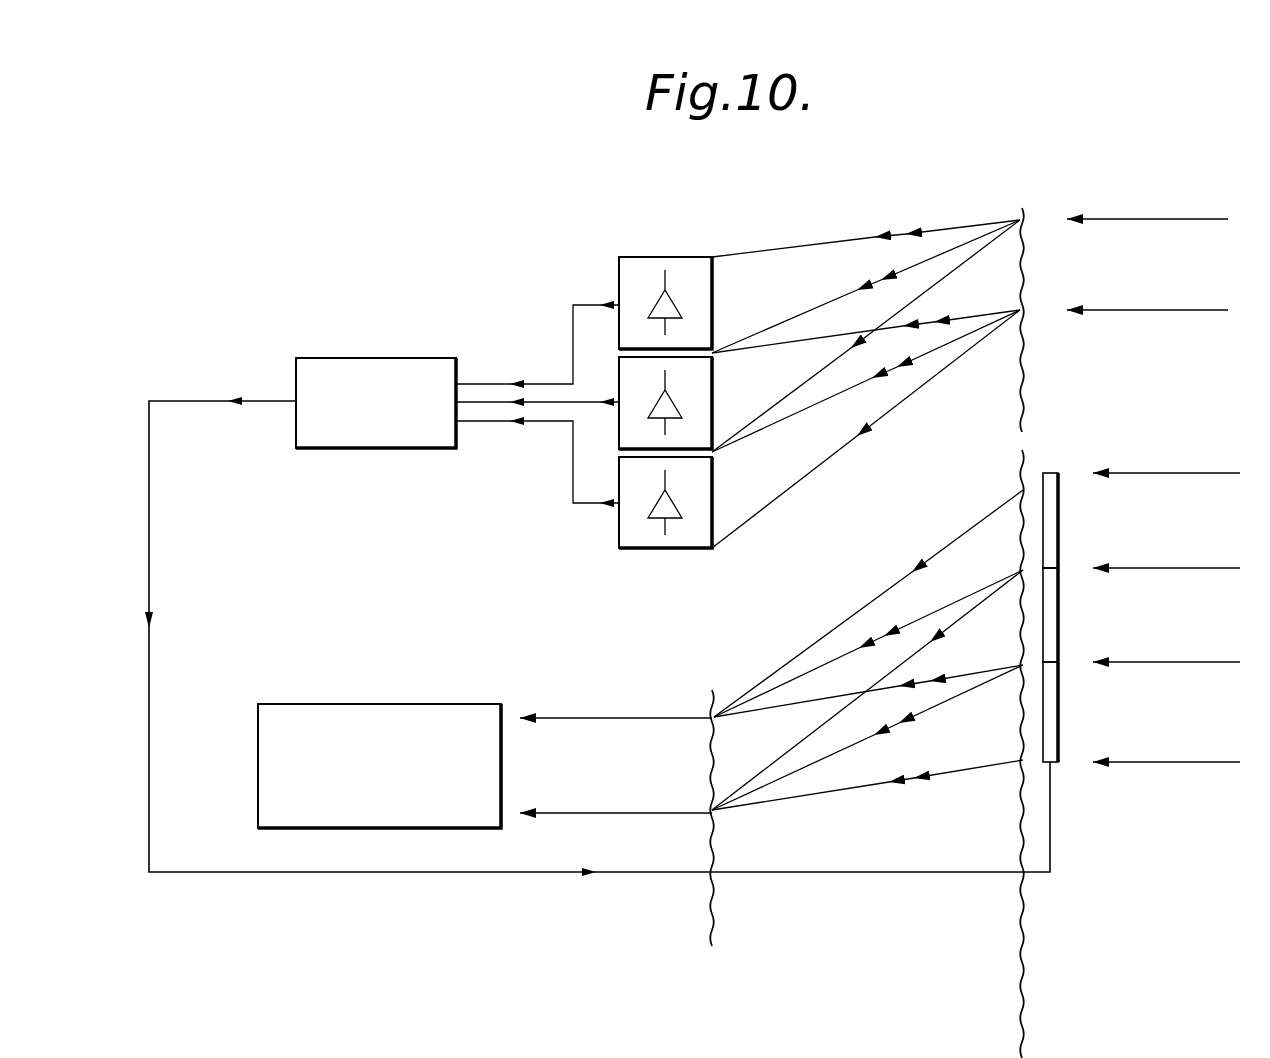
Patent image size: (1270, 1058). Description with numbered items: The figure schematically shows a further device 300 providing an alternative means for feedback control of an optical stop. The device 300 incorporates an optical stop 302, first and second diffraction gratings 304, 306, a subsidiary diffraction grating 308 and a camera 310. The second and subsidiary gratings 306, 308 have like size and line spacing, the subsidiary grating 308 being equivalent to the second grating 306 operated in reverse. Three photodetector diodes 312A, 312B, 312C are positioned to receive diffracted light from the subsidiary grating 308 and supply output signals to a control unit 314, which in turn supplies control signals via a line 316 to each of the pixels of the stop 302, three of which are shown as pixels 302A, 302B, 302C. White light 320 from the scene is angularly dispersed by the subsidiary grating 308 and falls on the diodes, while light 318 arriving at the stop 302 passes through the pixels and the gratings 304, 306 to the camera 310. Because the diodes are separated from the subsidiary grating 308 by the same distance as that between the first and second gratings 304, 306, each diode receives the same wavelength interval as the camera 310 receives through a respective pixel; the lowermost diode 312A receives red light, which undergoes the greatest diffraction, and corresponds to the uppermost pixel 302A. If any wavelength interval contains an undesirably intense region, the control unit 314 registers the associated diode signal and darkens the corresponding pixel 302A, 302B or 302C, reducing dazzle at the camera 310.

The device 300 is at (470, 280).
The optical stop 302 is at (1051, 474).
The pixel 302A is at (1058, 540).
The pixel 302B is at (1058, 621).
The pixel 302C is at (1058, 717).
The first diffraction grating 304 is at (1030, 448).
The second diffraction grating 306 is at (718, 678).
The subsidiary diffraction grating 308 is at (1025, 208).
The camera 310 is at (322, 703).
The photodetector diode 312A is at (619, 522).
The photodetector diode 312B is at (712, 404).
The photodetector diode 312C is at (657, 257).
The control unit 314 is at (361, 357).
The line 316 is at (742, 872).
The incident light beams 318 is at (1185, 568).
The white light 320 is at (1185, 310).